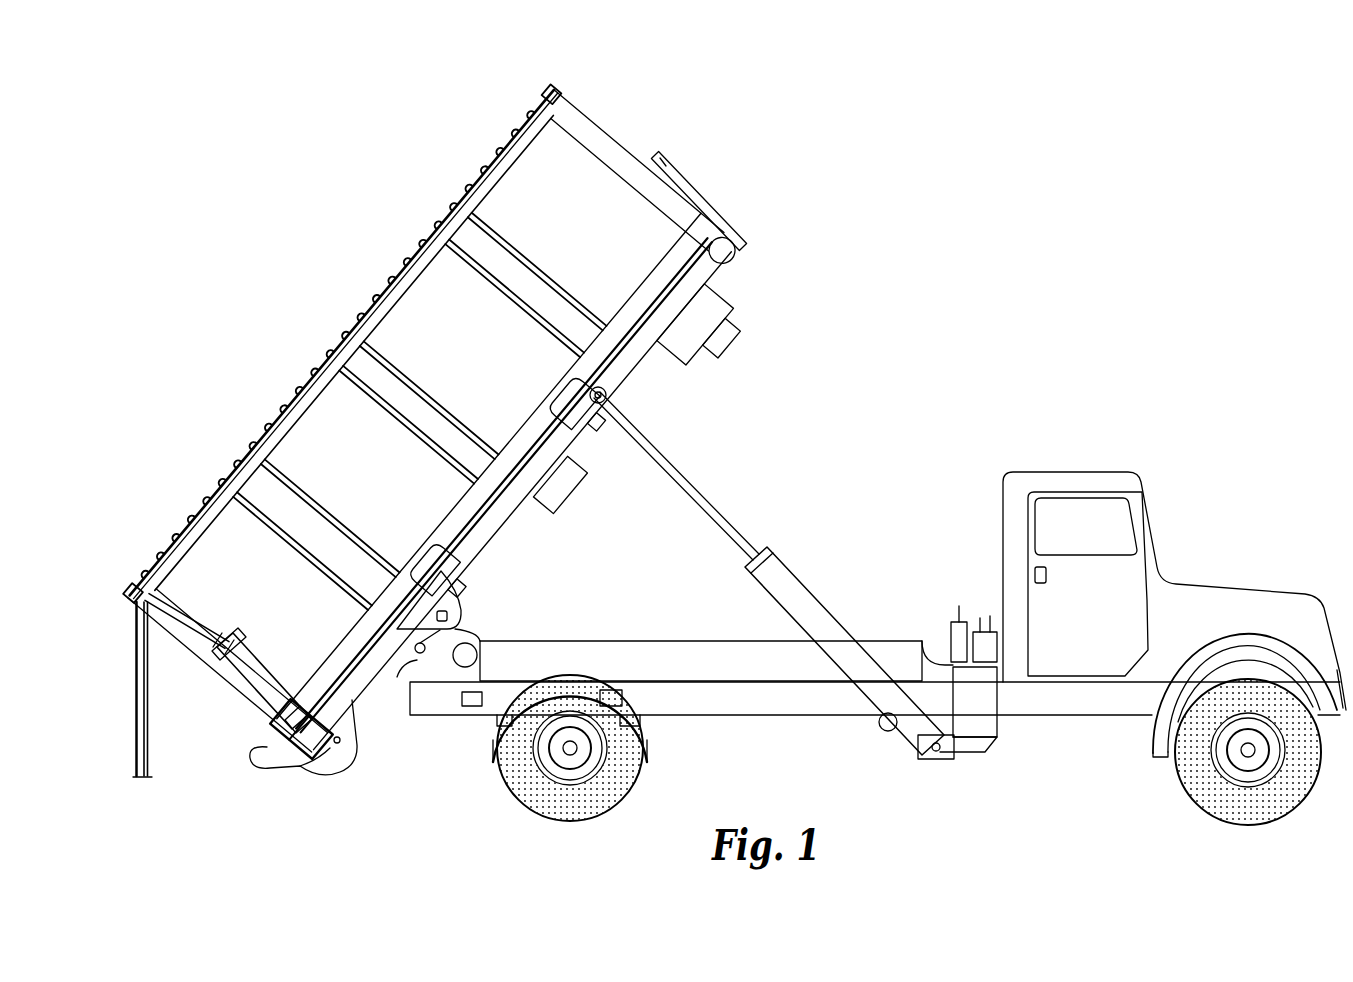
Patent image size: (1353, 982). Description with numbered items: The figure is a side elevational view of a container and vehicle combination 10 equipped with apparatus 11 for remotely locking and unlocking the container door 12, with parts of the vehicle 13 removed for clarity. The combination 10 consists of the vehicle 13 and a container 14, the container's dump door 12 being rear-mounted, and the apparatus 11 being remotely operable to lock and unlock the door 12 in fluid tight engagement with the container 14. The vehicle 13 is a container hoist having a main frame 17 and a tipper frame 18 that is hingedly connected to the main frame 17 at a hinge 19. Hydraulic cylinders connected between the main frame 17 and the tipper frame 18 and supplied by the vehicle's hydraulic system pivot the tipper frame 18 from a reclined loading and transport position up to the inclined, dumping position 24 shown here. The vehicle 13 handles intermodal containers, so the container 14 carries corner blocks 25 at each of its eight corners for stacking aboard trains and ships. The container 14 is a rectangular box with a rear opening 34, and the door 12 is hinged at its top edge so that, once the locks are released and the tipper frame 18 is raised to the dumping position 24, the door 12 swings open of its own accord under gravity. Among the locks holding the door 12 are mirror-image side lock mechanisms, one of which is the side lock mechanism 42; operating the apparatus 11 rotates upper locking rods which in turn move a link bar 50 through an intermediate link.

The container and vehicle combination 10 is at (258, 197).
The apparatus for remotely locking and unlocking the container door 11 is at (267, 734).
The container door 12 is at (150, 768).
The vehicle 13 is at (1058, 462).
The container 14 is at (257, 447).
The main frame 17 is at (648, 641).
The tipper frame 18 is at (505, 535).
The hinge 19 is at (425, 655).
The inclined, dumping position 24 is at (950, 200).
The corner blocks 25 is at (552, 90).
The rear opening 34 is at (228, 649).
The side lock mechanism 42 is at (230, 640).
The link bar 50 is at (268, 668).